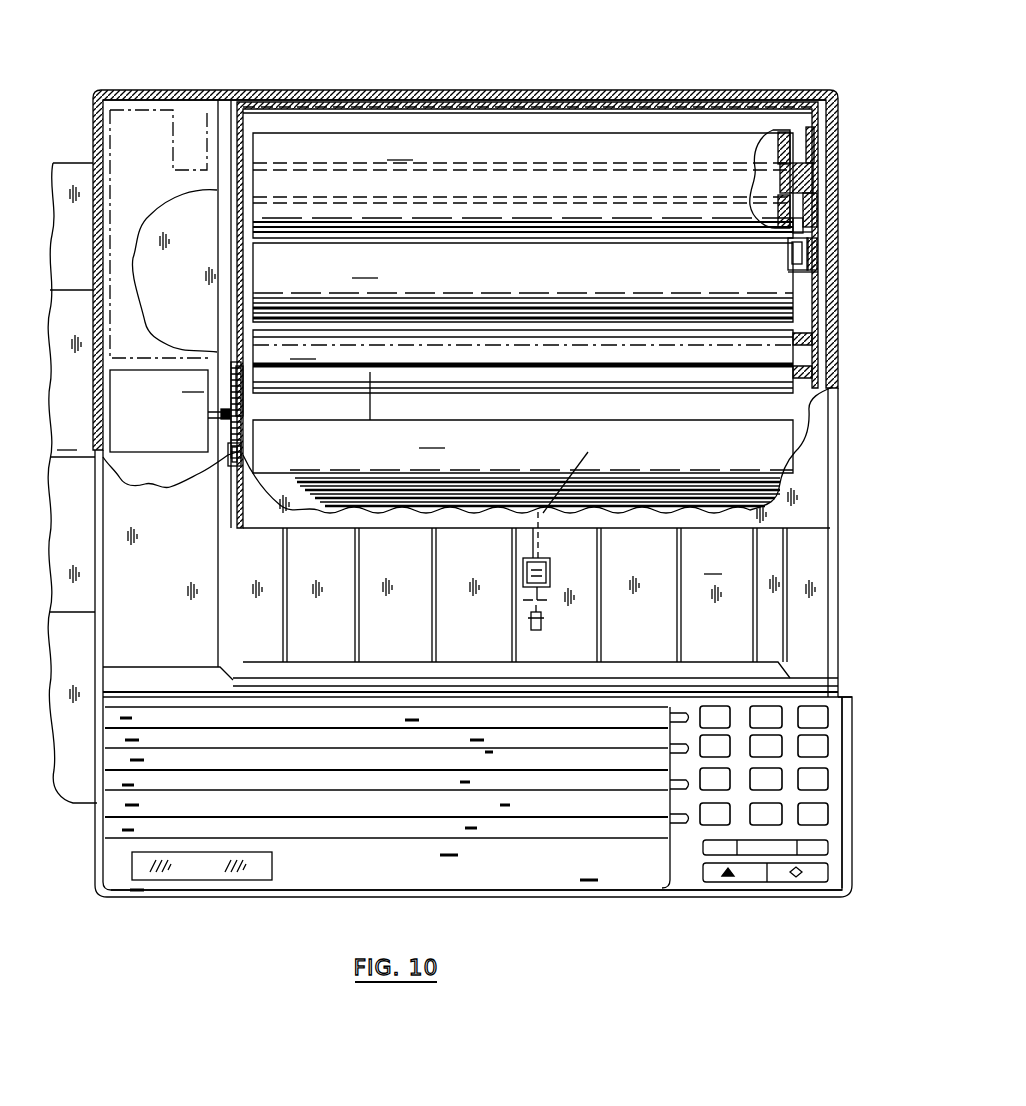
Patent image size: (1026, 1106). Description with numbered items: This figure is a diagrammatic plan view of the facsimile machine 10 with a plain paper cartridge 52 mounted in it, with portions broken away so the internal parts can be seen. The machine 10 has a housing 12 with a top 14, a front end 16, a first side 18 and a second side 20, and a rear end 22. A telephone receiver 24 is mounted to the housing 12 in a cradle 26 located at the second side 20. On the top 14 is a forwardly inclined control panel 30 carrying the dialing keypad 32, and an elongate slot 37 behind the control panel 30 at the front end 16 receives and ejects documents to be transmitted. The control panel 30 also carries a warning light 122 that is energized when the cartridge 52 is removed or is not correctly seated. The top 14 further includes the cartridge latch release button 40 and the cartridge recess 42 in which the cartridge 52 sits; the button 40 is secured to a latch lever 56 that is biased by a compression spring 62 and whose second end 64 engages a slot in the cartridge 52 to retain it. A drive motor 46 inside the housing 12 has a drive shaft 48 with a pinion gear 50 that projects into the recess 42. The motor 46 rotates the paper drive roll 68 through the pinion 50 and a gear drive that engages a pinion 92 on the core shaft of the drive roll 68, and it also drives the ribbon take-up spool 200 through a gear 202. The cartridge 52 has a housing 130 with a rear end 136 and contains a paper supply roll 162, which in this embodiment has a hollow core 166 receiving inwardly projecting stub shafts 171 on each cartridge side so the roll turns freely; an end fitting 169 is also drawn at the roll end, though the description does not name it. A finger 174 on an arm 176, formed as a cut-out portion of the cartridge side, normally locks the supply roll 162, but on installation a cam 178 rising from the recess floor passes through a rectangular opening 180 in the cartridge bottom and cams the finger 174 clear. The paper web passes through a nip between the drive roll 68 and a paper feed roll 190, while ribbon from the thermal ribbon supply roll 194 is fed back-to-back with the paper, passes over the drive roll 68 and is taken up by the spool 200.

The facsimile machine 10 is at (682, 88).
The housing 12 is at (840, 617).
The top 14 is at (516, 615).
The front end 16 is at (692, 891).
The first side 18 is at (846, 723).
The second side 20 is at (102, 840).
The rear end 22 is at (590, 92).
The telephone receiver 24 is at (72, 483).
The cradle 26 is at (98, 805).
The control panel 30 is at (767, 824).
The dialing keypad 32 is at (834, 790).
The elongate slot 37 is at (623, 675).
The cartridge latch release button 40 is at (550, 572).
The cartridge recess 42 is at (220, 99).
The drive motor 46 is at (159, 411).
The drive shaft 48 is at (222, 418).
The pinion gear 50 is at (242, 418).
The plain paper cartridge 52 is at (240, 93).
The latch lever 56 is at (540, 555).
The compression spring 62 is at (533, 628).
The second end 64 is at (573, 498).
The paper drive roll 68 is at (372, 372).
The pinion 92 is at (233, 360).
The warning light 122 is at (815, 848).
The cartridge housing 130 is at (396, 108).
The rear end 136 is at (503, 90).
The paper supply roll 162 is at (523, 185).
The hollow core 166 is at (784, 156).
The bushing 169 is at (776, 135).
The stub shafts 171 is at (800, 175).
The finger 174 is at (808, 217).
The arm 176 is at (818, 234).
The cam 178 is at (790, 246).
The rectangular opening 180 is at (820, 262).
The paper feed roll 190 is at (532, 361).
The thermal ribbon supply roll 194 is at (523, 282).
The ribbon take-up spool 200 is at (523, 463).
The gear 202 is at (230, 446).